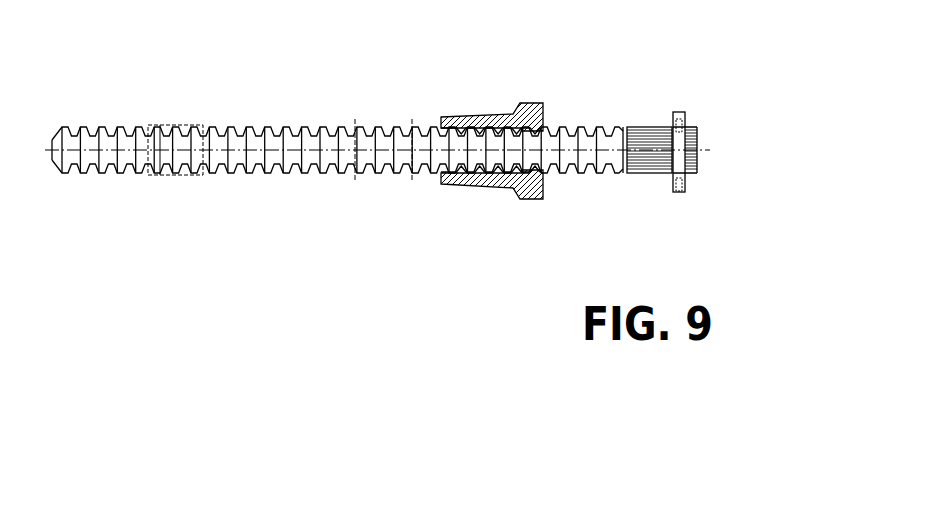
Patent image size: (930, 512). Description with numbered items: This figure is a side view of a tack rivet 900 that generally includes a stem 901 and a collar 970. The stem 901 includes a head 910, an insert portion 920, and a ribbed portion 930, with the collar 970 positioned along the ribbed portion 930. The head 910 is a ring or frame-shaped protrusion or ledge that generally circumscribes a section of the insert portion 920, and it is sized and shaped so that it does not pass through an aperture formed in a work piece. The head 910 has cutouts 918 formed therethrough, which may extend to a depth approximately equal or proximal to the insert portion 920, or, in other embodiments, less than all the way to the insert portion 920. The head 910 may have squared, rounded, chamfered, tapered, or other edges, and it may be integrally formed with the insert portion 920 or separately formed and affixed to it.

The tack rivet 900 is at (660, 47).
The stem 901 is at (111, 110).
The ribbed portion 930 is at (292, 172).
The collar 970 is at (505, 184).
The insert portion 920 is at (652, 168).
The head 910 is at (694, 151).
The cutouts 918 is at (683, 127).